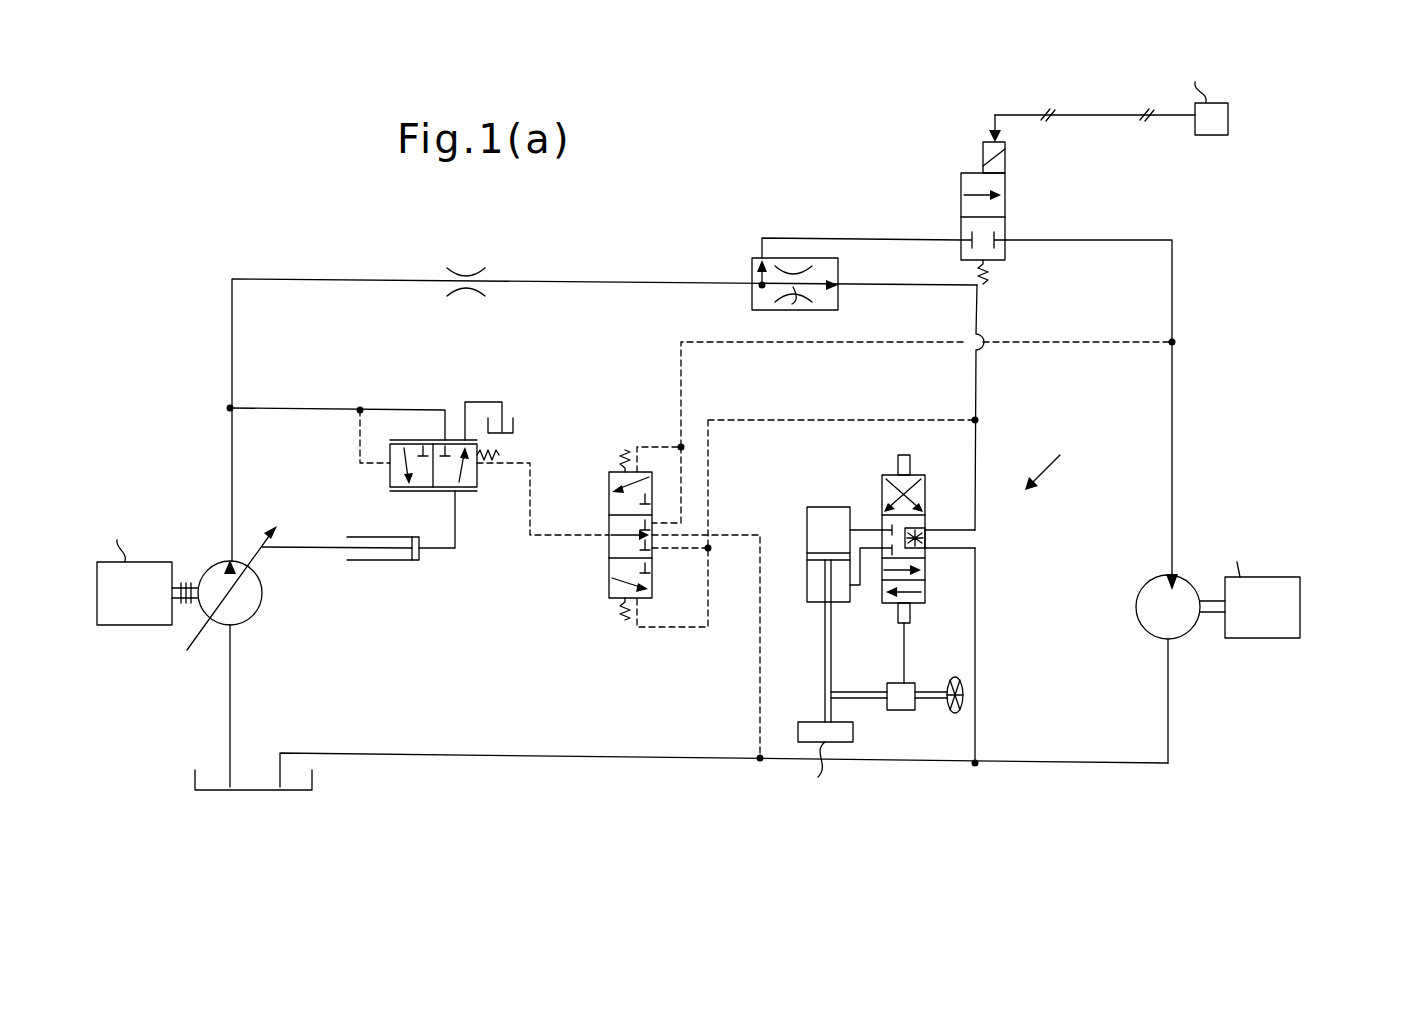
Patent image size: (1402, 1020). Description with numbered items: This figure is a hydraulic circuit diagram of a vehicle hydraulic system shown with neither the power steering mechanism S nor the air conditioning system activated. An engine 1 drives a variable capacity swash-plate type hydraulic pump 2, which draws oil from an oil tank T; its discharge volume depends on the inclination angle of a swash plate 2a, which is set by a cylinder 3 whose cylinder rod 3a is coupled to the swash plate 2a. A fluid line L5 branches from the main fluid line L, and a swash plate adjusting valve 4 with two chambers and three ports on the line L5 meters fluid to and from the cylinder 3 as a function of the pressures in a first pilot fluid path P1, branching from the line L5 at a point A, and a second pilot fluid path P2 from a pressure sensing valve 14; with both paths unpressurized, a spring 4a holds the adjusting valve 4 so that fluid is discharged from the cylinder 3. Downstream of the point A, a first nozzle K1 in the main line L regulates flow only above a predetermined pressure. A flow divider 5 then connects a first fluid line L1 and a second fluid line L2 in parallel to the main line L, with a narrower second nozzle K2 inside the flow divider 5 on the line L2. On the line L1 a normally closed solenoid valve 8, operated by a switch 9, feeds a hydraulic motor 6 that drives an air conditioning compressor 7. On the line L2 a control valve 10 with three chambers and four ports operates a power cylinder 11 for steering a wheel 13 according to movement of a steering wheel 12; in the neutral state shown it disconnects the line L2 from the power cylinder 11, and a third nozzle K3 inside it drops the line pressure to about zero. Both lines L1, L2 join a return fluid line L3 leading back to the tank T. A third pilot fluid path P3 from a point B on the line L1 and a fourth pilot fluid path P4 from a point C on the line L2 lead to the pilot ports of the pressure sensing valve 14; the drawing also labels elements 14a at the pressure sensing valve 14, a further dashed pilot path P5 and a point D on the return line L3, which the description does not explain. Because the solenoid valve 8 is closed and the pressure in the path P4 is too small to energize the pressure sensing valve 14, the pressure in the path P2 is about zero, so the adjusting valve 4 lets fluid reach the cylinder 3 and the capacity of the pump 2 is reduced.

The engine 1 is at (128, 612).
The variable capacity swash-plate type hydraulic pump 2 is at (252, 598).
The swash plate 2a is at (252, 540).
The cylinder 3 is at (395, 560).
The cylinder rod 3a is at (307, 550).
The swash plate adjusting valve 4 is at (470, 491).
The spring 4a is at (500, 455).
The flow divider 5 is at (752, 298).
The hydraulic motor 6 is at (1138, 612).
The air conditioning compressor 7 is at (1265, 638).
The solenoid valve 8 is at (1005, 212).
The switch 9 is at (1217, 135).
The control valve 10 is at (882, 478).
The power cylinder 11 is at (807, 525).
The steering wheel 12 is at (955, 677).
The wheel 13 is at (853, 732).
The pressure sensing valve 14 is at (609, 548).
The springs of switching valve 14a is at (624, 450).
The main fluid line L is at (308, 279).
The first fluid line L1 is at (868, 238).
The second fluid line L2 is at (977, 393).
The return fluid line L3 is at (545, 757).
The fluid line L5 is at (312, 408).
The first nozzle K1 is at (467, 268).
The second nozzle K2 is at (790, 292).
The third nozzle K3 is at (925, 540).
The first pilot fluid path P1 is at (357, 447).
The second pilot fluid path P2 is at (547, 538).
The third pilot fluid path P3 is at (683, 360).
The fourth pilot fluid path P4 is at (710, 463).
The pilot line P5 is at (760, 705).
The branching point A is at (362, 408).
The point B is at (1175, 340).
The point C is at (980, 424).
The junction D is at (762, 760).
The power steering mechanism S is at (1057, 460).
The oil tank T is at (240, 790).